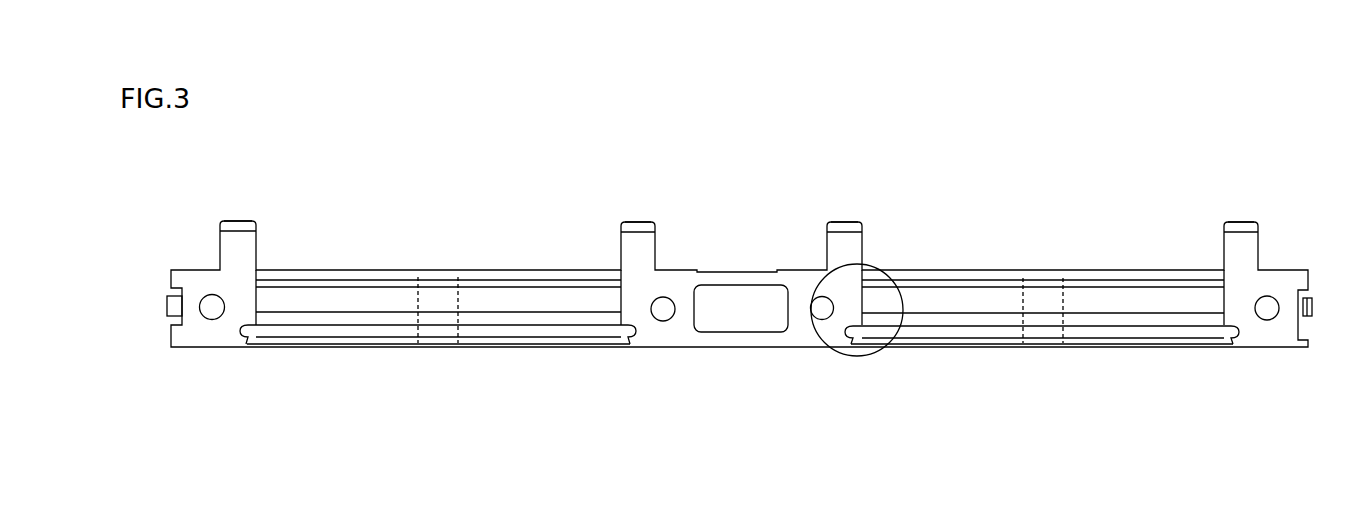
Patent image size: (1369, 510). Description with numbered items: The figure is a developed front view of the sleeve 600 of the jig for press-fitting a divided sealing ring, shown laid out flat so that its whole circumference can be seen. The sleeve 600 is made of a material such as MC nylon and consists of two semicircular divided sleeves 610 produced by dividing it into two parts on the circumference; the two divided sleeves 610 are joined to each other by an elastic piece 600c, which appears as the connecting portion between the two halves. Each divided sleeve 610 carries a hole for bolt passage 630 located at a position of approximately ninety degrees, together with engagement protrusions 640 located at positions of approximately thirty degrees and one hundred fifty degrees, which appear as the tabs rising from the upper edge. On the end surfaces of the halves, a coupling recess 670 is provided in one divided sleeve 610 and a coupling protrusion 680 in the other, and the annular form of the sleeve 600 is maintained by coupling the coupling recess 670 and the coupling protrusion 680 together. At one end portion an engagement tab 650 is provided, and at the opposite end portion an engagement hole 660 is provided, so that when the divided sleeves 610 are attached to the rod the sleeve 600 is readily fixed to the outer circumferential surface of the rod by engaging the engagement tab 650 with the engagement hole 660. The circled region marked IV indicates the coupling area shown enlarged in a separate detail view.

The sleeve 600 is at (1283, 189).
The divided sleeve 610 is at (374, 270).
The hole for bolt passage 630 is at (470, 282).
The engagement protrusion 640 is at (247, 243).
The engagement tab 650 is at (1312, 307).
The engagement hole 660 is at (167, 310).
The coupling recess 670 is at (810, 313).
The coupling protrusion 680 is at (208, 319).
The elastic piece 600c is at (740, 340).
The detail view region IV is at (852, 357).